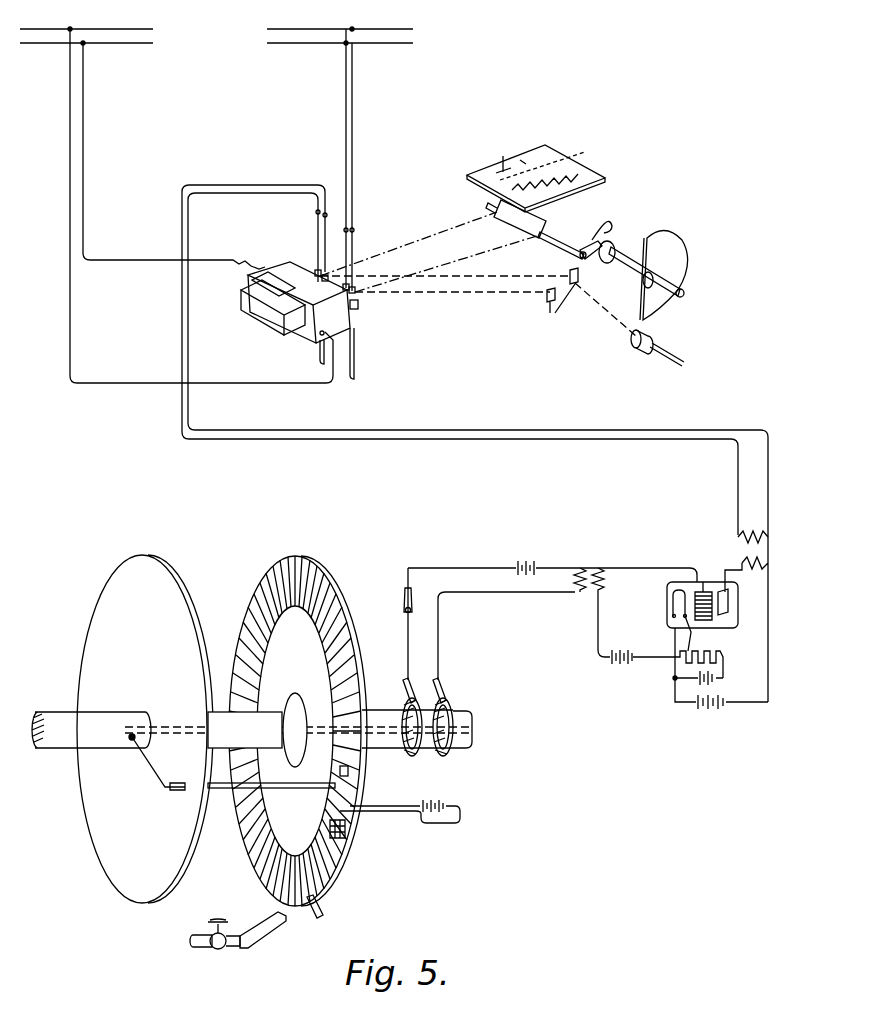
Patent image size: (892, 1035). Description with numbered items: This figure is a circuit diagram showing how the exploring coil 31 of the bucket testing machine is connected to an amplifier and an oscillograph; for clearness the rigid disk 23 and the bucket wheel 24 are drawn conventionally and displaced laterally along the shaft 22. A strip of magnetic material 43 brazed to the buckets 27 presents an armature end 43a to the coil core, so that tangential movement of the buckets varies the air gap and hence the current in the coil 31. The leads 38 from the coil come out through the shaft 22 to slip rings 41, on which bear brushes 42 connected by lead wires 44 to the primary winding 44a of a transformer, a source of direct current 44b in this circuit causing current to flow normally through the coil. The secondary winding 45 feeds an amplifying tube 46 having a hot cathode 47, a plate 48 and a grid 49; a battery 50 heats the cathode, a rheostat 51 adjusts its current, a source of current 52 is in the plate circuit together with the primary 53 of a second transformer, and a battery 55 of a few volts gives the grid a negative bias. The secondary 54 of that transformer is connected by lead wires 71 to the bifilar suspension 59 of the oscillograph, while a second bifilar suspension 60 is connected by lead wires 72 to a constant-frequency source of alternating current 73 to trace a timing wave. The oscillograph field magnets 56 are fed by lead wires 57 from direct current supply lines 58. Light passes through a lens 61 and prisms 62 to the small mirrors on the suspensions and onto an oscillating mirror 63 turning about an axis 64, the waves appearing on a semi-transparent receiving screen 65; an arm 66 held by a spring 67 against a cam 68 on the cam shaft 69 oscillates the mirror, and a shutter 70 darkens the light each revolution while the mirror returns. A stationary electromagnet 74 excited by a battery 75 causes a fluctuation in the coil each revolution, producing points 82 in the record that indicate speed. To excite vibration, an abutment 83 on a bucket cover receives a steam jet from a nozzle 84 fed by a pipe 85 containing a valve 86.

The shaft 22 is at (97, 714).
The rigid disk 23 is at (130, 888).
The bucket wheel 24 is at (277, 837).
The buckets 27 is at (250, 820).
The coil 31 is at (328, 793).
The leads 38 is at (148, 775).
The slip rings 41 is at (443, 756).
The brushes 42 is at (447, 694).
The strip of magnetic material 43 is at (350, 772).
The armature end 43a is at (417, 757).
The lead wires 44 is at (461, 568).
The primary winding 44a is at (580, 567).
The source of direct current 44b is at (525, 562).
The secondary winding 45 is at (603, 572).
The amplifying tube 46 is at (703, 582).
The hot cathode 47 is at (668, 604).
The plate 48 is at (728, 612).
The grid 49 is at (703, 628).
The battery 50 is at (715, 680).
The rheostat 51 is at (723, 660).
The source of current 52 is at (710, 712).
The primary 53 is at (740, 560).
The secondary 54 is at (742, 533).
The battery 55 is at (622, 665).
The field magnets 56 is at (265, 318).
The lead wires 57 is at (107, 277).
The supply lines 58 is at (140, 44).
The bifilar suspension 59 is at (318, 357).
The bifilar suspension 60 is at (356, 357).
The lens 61 is at (654, 339).
The prisms 62 is at (478, 277).
The oscillating mirror 63 is at (550, 230).
The axis 64 is at (552, 250).
The receiving screen 65 is at (603, 182).
The arm 66 is at (587, 258).
The spring 67 is at (612, 227).
The cam 68 is at (615, 248).
The cam shaft 69 is at (681, 289).
The shutter 70 is at (678, 250).
The lead wires 71 is at (399, 439).
The lead wires 72 is at (348, 184).
The source of alternating current 73 is at (406, 44).
The electromagnet 74 is at (345, 832).
The battery 75 is at (452, 805).
The points 82 is at (522, 165).
The abutment 83 is at (319, 904).
The nozzle 84 is at (268, 930).
The pipe 85 is at (203, 944).
The valve 86 is at (220, 949).